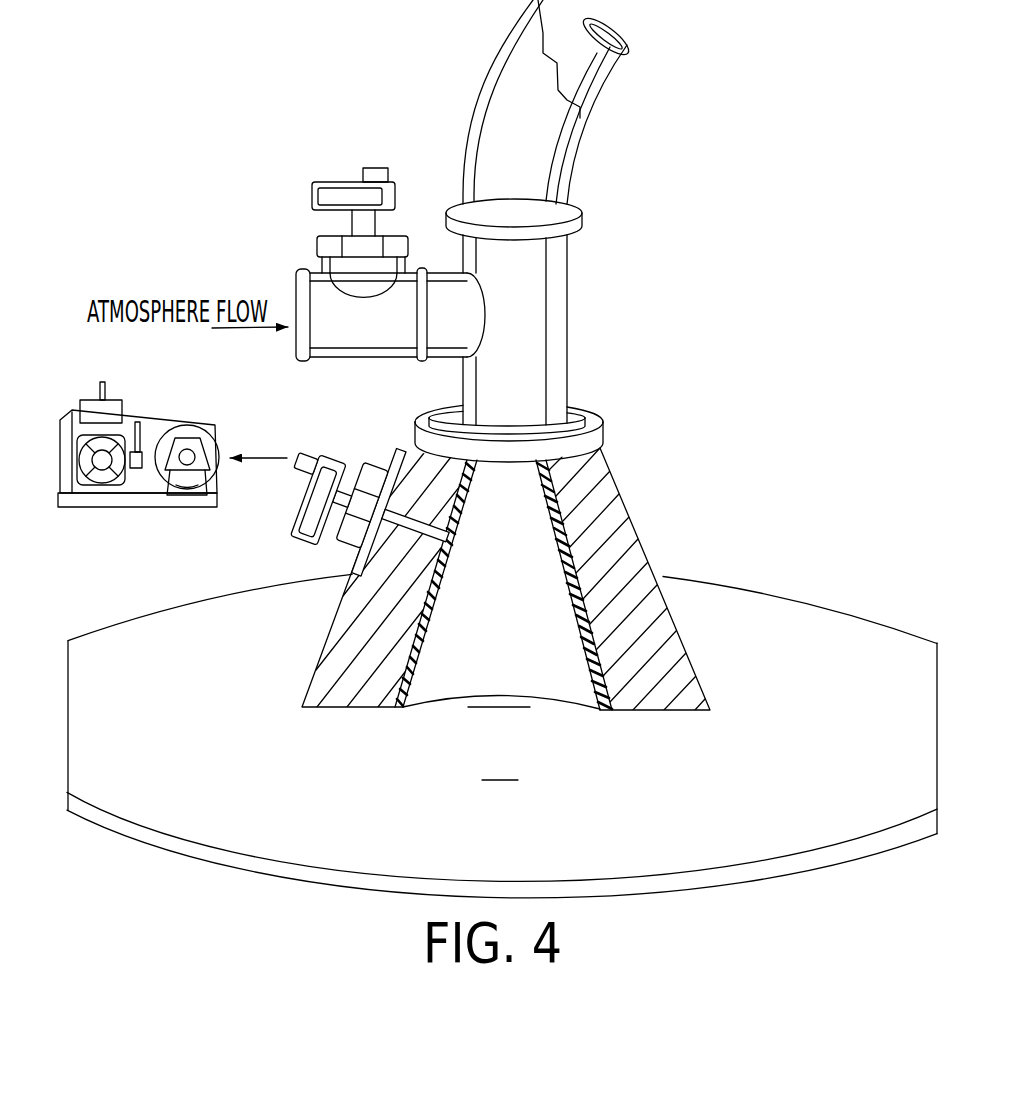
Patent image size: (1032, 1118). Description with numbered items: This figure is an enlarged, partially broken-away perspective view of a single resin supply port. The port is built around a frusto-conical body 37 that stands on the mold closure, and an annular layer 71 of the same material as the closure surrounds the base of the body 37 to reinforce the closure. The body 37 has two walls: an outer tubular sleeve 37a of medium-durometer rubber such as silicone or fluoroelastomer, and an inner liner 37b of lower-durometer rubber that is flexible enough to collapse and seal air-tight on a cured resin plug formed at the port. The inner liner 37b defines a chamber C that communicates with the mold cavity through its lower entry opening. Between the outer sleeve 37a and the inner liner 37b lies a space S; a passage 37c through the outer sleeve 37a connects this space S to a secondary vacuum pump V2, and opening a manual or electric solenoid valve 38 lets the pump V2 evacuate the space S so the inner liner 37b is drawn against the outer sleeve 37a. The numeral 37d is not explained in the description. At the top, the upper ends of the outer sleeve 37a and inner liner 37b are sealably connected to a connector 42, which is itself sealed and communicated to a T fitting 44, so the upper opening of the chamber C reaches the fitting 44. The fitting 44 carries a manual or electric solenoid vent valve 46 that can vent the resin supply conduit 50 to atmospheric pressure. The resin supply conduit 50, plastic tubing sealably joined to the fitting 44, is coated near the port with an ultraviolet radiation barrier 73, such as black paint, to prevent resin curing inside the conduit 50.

The ultraviolet radiation barrier 73 is at (490, 93).
The resin supply conduit 50 is at (632, 42).
The vent valve 46 is at (340, 270).
The T fitting 44 is at (527, 307).
The connector 42 is at (572, 400).
The frusto-conical body 37 is at (524, 537).
The outer tubular sleeve 37a is at (421, 465).
The inner liner 37b is at (573, 613).
The passage 37c is at (447, 542).
The liner 37d is at (558, 497).
The valve 38 is at (407, 485).
The annular layer 71 is at (665, 885).
The space S is at (585, 583).
The chamber C is at (517, 617).
The secondary vacuum pump V2 is at (155, 510).